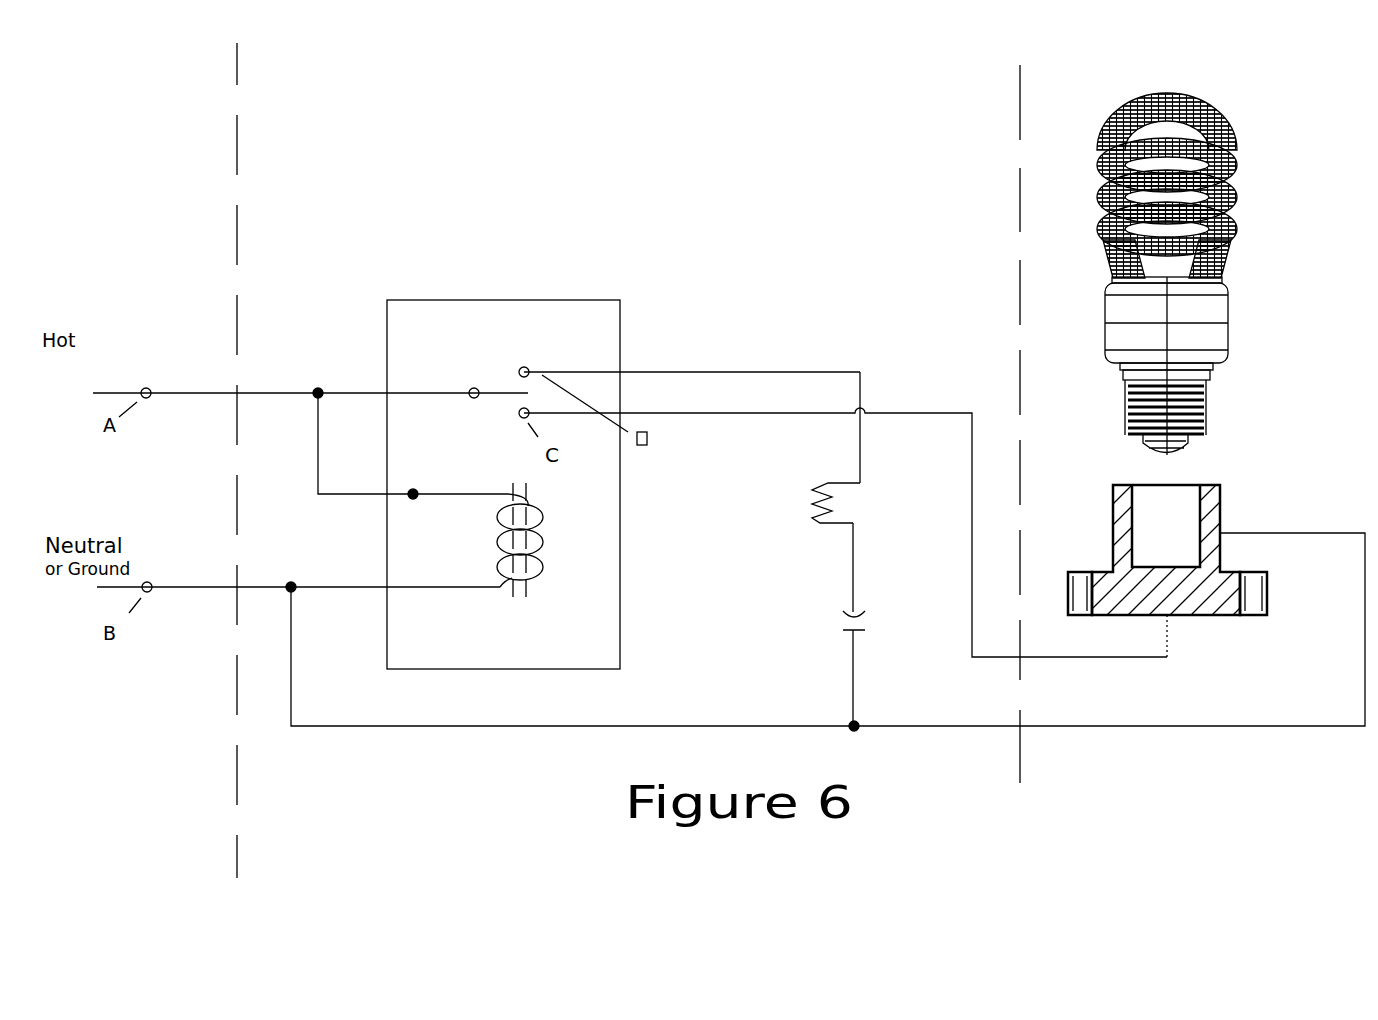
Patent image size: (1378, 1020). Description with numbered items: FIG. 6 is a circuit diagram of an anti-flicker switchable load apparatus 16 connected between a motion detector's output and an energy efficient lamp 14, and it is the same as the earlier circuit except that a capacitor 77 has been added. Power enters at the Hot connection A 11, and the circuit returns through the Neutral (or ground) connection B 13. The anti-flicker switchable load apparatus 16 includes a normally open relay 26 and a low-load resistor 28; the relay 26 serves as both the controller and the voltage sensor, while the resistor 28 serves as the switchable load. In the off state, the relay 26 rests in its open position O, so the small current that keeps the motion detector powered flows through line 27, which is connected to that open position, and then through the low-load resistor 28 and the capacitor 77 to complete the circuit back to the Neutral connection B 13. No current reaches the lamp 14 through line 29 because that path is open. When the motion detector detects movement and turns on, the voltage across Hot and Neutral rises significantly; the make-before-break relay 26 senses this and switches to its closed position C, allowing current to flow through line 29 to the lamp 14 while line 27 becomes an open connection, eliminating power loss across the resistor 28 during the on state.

The Hot connection A 11 is at (310, 425).
The Neutral (or ground) connection B 13 is at (298, 626).
The energy efficient lamp 14 is at (1227, 370).
The anti-flicker switchable load apparatus 16 is at (836, 327).
The normally open relay 26 is at (554, 650).
The line 27 is at (740, 372).
The low-load resistor 28 is at (818, 542).
The line 29 is at (915, 412).
The capacitor 77 is at (878, 635).